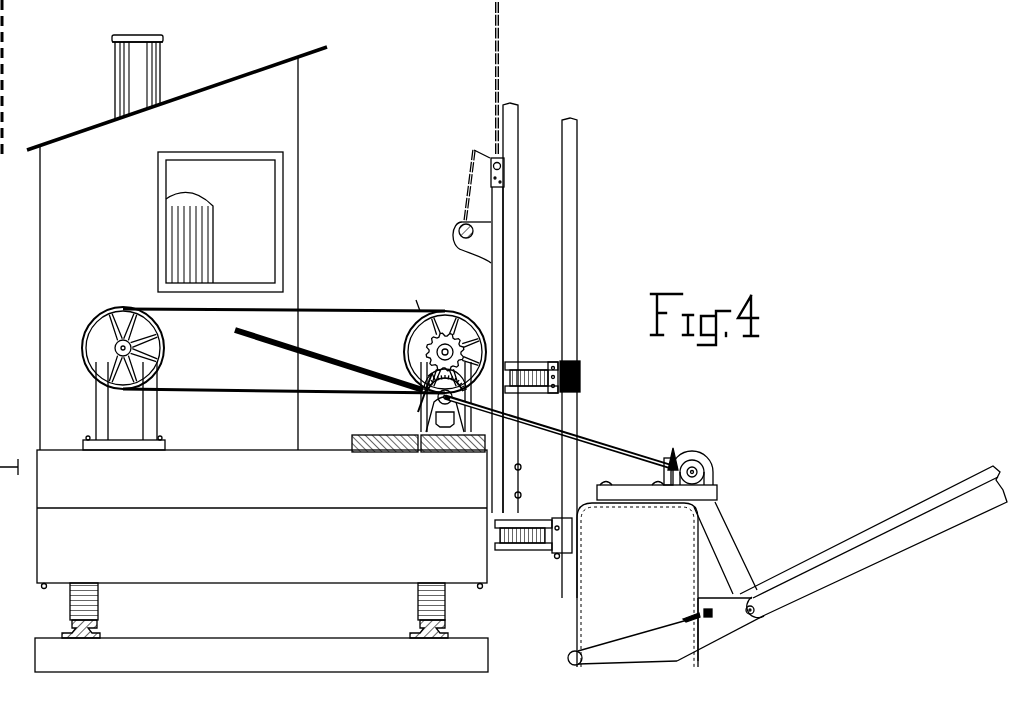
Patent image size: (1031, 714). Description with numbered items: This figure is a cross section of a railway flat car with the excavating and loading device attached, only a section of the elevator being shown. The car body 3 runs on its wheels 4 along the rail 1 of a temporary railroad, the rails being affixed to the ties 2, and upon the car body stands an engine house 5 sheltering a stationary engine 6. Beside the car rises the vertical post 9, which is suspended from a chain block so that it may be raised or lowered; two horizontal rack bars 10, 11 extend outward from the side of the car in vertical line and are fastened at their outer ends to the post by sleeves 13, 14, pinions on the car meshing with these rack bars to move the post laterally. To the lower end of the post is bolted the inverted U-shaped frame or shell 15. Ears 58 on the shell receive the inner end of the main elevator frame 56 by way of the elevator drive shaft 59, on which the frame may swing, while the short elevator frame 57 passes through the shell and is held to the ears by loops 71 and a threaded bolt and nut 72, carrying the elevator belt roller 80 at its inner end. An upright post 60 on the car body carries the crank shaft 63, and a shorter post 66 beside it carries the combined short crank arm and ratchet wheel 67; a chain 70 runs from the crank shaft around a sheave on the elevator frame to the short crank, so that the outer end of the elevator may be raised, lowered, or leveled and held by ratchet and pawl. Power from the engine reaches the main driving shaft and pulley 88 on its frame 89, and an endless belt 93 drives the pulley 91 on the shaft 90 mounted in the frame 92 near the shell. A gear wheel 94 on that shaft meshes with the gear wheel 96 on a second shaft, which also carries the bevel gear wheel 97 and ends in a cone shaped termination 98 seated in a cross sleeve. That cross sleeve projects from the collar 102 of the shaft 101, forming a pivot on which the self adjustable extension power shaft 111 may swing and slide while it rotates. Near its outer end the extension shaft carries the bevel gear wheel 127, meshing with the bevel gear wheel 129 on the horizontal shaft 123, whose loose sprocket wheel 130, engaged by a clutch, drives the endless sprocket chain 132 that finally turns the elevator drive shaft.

The rail 1 is at (415, 622).
The ties 2 is at (257, 638).
The car body 3 is at (490, 567).
The wheels 4 is at (455, 601).
The engine house 5 is at (40, 235).
The stationary engine 6 is at (216, 228).
The vertical post 9 is at (578, 218).
The horizontal rack bar 10 is at (530, 362).
The horizontal rack bar 11 is at (536, 520).
The sleeve 13 is at (581, 375).
The sleeve 14 is at (560, 510).
The frame or shell 15 is at (636, 508).
The main elevator frame 56 is at (888, 556).
The short elevator frame 57 is at (640, 662).
The ears 58 is at (727, 631).
The elevator drive shaft 59 is at (762, 615).
The upright post 60 is at (519, 197).
The crank shaft 63 is at (458, 229).
The shorter post 66 is at (492, 280).
The combined short crank arm and ratchet wheel 67 is at (506, 162).
The chain 70 is at (494, 133).
The loop 71 is at (690, 613).
The threaded bolt and nut 72 is at (708, 608).
The elevator belt roller 80 is at (568, 660).
The main driving shaft and pulley 88 is at (82, 348).
The frame 89 is at (95, 412).
The shaft 90 is at (434, 344).
The pulley 91 is at (409, 331).
The frame 92 is at (413, 352).
The endless belt 93 is at (344, 309).
The gear wheel 94 is at (284, 338).
The gear wheel 96 is at (420, 455).
The bevel gear wheel 97 is at (425, 411).
The cone shaped termination 98 is at (430, 425).
The shaft 101 is at (424, 376).
The collar 102 is at (424, 397).
The self adjustable extension power shaft 111 is at (600, 448).
The horizontal shaft 123 is at (719, 492).
The bevel gear wheel 127 is at (675, 446).
The bevel gear wheel 129 is at (703, 458).
The loose sprocket wheel 130 is at (714, 464).
The endless sprocket chain 132 is at (745, 533).